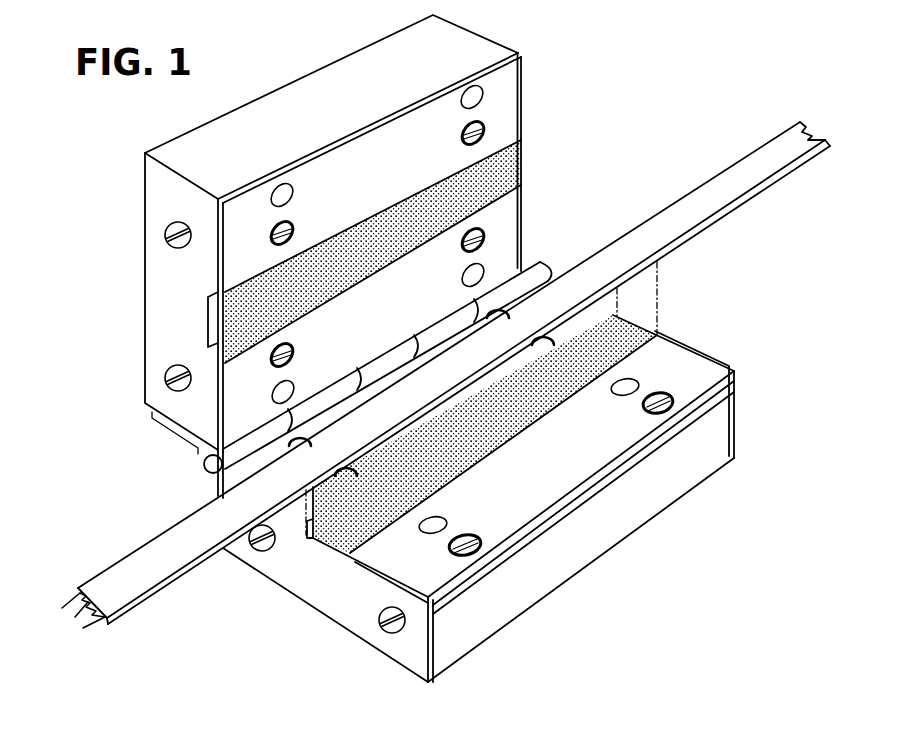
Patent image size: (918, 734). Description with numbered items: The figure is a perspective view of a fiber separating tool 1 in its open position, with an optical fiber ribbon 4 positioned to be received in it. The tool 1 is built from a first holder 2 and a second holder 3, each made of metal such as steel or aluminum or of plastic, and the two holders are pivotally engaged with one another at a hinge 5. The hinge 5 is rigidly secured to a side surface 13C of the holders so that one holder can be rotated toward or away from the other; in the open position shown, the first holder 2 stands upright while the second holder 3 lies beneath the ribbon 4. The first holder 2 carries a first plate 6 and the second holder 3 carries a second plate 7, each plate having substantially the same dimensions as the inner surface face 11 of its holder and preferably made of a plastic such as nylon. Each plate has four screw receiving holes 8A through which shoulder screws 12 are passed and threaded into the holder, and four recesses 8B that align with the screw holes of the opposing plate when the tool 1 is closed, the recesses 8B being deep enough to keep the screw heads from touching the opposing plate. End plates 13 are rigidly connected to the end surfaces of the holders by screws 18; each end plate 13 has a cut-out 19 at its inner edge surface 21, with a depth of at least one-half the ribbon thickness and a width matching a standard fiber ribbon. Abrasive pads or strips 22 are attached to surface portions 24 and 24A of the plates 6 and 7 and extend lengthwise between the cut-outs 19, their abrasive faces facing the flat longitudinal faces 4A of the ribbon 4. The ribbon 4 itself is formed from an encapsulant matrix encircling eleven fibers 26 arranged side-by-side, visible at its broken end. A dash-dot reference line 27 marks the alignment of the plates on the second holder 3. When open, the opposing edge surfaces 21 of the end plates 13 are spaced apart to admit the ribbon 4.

The tool 1 is at (645, 138).
The first holder 2 is at (333, 50).
The second holder 3 is at (466, 662).
The optical fiber ribbon 4 is at (752, 178).
The flat longitudinal faces 4A is at (125, 566).
The hinge 5 is at (204, 475).
The first plate 6 is at (508, 105).
The second plate 7 is at (660, 432).
The screw receiving holes 8A is at (292, 221).
The recesses 8B is at (480, 92).
The inner surface face 11 is at (692, 367).
The shoulder screws 12 is at (277, 223).
The end plates 13 is at (482, 34).
The side surface 13C is at (147, 412).
The screws 18 is at (163, 241).
The cut-out 19 is at (531, 160).
The inner edge surface 21 is at (523, 228).
The abrasive strips 22 is at (502, 192).
The surface portion of first plate 24 is at (367, 143).
The surface portion of second plate 24A is at (580, 470).
The fibers 26 is at (50, 614).
The center line 27 is at (307, 540).